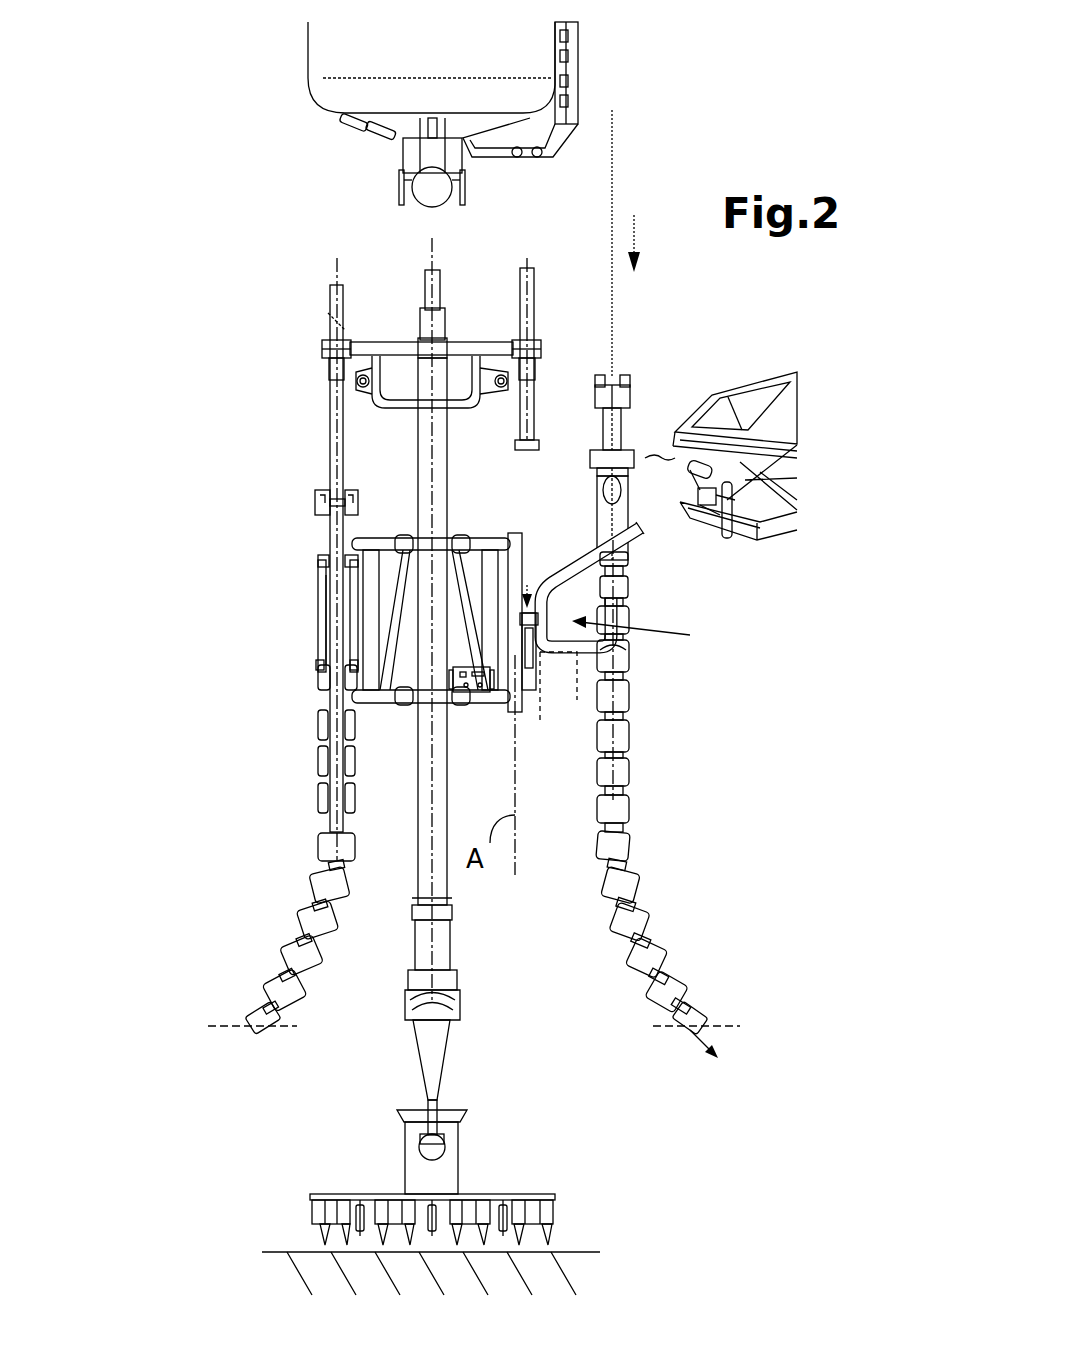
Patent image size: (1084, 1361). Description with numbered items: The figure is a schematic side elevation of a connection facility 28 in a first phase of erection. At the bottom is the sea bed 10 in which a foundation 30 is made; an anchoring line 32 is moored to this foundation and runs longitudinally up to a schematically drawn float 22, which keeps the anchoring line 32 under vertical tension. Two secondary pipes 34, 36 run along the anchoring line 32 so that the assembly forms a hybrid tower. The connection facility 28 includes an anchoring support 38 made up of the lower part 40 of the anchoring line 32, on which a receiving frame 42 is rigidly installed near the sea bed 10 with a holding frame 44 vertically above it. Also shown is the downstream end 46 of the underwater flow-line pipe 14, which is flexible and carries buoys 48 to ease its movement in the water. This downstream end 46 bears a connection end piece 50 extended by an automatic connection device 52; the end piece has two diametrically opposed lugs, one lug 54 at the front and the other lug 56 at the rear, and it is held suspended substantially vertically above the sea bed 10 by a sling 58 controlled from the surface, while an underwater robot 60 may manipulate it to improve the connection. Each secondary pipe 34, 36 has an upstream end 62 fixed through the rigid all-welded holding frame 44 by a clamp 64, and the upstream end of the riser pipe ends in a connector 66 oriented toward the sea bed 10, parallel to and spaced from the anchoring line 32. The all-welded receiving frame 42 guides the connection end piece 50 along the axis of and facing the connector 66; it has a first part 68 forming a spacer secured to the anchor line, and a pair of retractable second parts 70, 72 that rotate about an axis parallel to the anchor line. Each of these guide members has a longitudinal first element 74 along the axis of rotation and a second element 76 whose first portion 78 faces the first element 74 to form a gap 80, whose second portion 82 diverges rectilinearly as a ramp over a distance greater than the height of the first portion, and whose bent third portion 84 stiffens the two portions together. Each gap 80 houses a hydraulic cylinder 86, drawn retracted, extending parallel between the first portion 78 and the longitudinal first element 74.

The sea bed 10 is at (283, 1250).
The underwater flow-line pipe 14 is at (690, 1030).
The float 22 is at (447, 66).
The connection facility 28 is at (295, 549).
The foundation 30 is at (362, 1194).
The anchoring line 32 is at (422, 880).
The secondary pipe 34 is at (345, 292).
The secondary pipe 36 is at (528, 366).
The anchoring support 38 is at (241, 638).
The lower part of the anchoring line 40 is at (408, 669).
The receiving frame 42 is at (288, 609).
The holding frame 44 is at (462, 345).
The downstream end 46 is at (646, 787).
The buoys 48 is at (620, 808).
The connection end piece 50 is at (636, 441).
The automatic connection device 52 is at (630, 385).
The lug 54 is at (597, 488).
The lug 56 is at (628, 490).
The sling 58 is at (612, 135).
The underwater robot 60 is at (773, 368).
The upstream end 62 is at (333, 368).
The clamp 64 is at (330, 342).
The connector 66 is at (517, 449).
The first part 68 is at (455, 740).
The second part 70 is at (535, 700).
The second part 72 is at (562, 672).
The longitudinal first element 74 is at (471, 637).
The second element 76 is at (651, 632).
The first portion 78 is at (547, 632).
The gap 80 is at (583, 576).
The second portion 82 is at (585, 568).
The bent third portion 84 is at (616, 652).
The hydraulic cylinder 86 is at (505, 705).